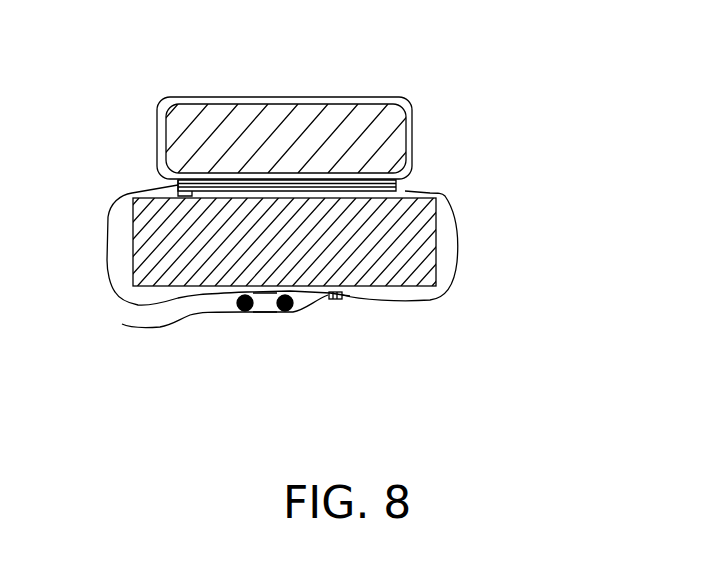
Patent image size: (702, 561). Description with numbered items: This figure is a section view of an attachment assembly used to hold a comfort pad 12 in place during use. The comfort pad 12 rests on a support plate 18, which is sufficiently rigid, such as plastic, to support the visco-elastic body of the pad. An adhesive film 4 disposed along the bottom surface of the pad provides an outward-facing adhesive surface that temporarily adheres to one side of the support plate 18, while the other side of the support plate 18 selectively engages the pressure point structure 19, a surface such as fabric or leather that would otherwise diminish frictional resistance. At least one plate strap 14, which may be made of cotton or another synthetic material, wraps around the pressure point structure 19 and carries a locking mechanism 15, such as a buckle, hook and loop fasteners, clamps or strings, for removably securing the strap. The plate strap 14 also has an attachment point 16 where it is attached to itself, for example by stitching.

The comfort pad 12 is at (287, 97).
The support plate 18 is at (397, 187).
The plate strap 14 is at (440, 193).
The pressure point structure 19 is at (383, 252).
The adhesive film 4 is at (182, 181).
The locking mechanism 15 is at (270, 312).
The attachment point 16 is at (340, 298).